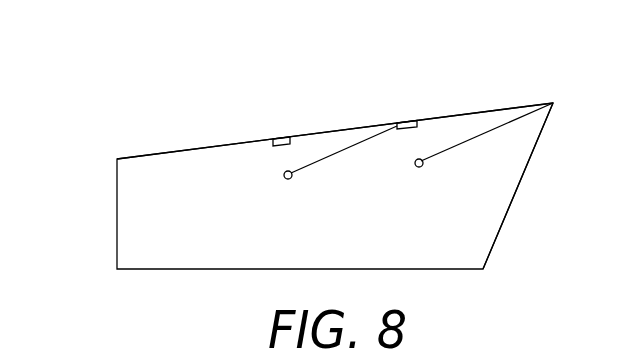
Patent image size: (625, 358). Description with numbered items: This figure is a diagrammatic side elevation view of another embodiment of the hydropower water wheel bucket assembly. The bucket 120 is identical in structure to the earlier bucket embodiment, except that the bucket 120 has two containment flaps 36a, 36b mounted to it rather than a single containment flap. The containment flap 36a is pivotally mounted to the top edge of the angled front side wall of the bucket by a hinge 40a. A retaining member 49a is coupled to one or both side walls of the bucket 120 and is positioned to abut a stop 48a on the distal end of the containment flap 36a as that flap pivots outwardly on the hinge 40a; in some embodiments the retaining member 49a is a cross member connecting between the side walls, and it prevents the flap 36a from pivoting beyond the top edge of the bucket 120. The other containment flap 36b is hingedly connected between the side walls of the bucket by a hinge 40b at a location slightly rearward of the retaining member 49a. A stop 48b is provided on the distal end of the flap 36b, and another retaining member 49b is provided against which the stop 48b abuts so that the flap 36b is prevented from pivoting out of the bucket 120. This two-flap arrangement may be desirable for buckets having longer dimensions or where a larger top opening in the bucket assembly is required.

The bucket 120 is at (111, 104).
The hinge 40a is at (537, 143).
The hinge 40b is at (397, 126).
The containment flap 36a is at (463, 143).
The containment flap 36b is at (320, 161).
The stop 48a is at (418, 168).
The stop 48b is at (287, 180).
The retaining member 49a is at (405, 130).
The retaining member 49b is at (273, 147).